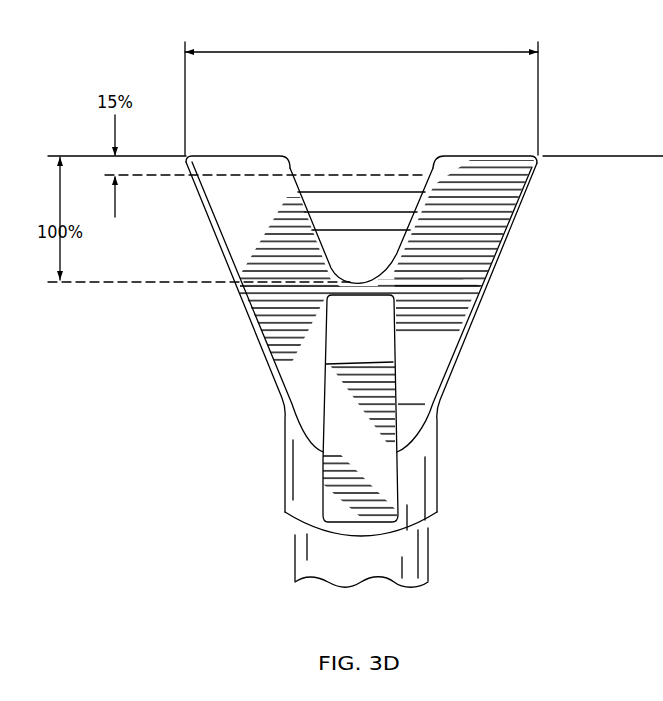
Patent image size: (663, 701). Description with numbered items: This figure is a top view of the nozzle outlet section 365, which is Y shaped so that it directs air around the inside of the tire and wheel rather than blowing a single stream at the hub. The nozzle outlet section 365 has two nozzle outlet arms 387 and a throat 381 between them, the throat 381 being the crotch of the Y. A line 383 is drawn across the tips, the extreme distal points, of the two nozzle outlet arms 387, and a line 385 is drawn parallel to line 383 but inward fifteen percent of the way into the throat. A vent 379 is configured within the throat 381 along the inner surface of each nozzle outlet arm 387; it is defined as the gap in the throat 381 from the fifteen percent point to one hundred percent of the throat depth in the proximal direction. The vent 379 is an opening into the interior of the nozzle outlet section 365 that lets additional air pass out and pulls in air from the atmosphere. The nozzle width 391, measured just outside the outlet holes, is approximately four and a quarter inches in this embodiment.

The nozzle outlet section 365 is at (484, 410).
The vent 379 is at (303, 177).
The throat 381 is at (370, 253).
The line 383 is at (613, 155).
The line 385 is at (365, 177).
The nozzle outlet arm 387 is at (513, 230).
The nozzle width 391 is at (361, 92).